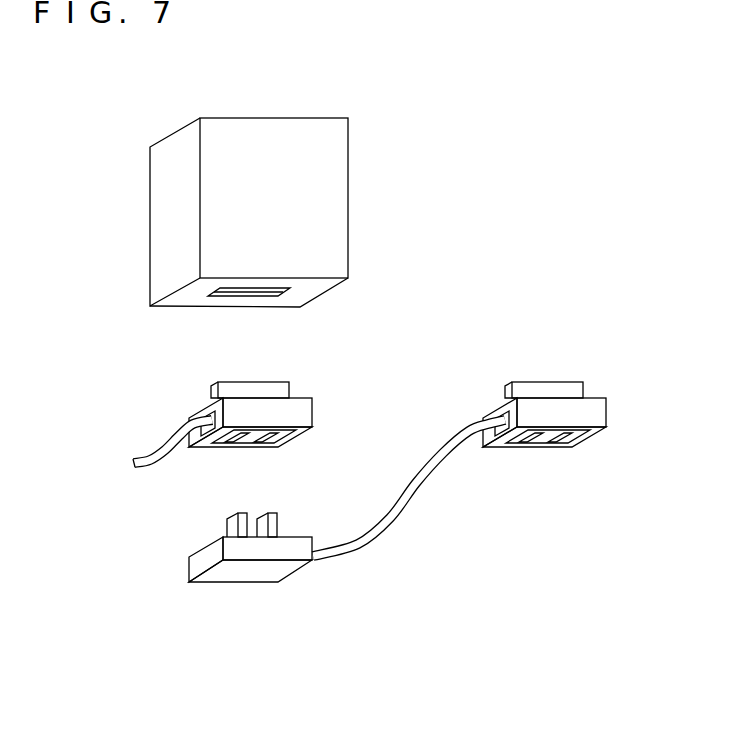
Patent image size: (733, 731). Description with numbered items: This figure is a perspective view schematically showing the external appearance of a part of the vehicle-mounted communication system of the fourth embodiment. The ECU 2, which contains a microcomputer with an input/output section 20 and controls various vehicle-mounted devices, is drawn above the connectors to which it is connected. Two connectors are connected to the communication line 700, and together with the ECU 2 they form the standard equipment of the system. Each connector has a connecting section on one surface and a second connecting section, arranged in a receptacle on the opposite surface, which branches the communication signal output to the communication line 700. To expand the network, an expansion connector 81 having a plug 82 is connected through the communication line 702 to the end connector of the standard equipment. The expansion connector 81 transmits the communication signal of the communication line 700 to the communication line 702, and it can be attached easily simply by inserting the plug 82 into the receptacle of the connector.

The ECU 2 is at (242, 123).
The input/output section 20 is at (269, 293).
The communication line 700 is at (152, 456).
The communication line 702 is at (372, 541).
The expansion connector 81 is at (270, 553).
The plug 82 is at (227, 525).